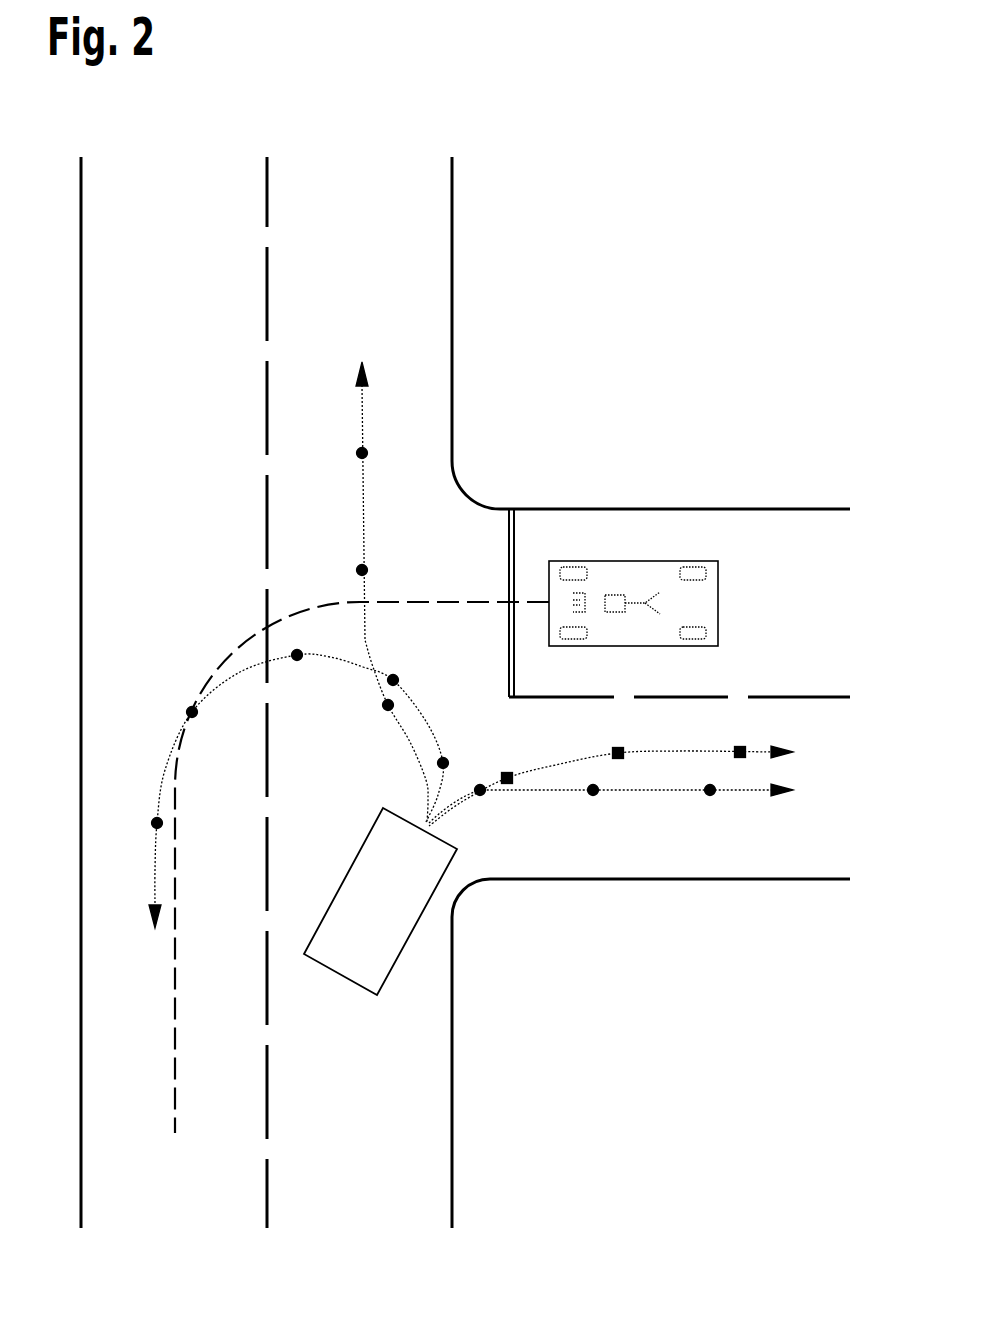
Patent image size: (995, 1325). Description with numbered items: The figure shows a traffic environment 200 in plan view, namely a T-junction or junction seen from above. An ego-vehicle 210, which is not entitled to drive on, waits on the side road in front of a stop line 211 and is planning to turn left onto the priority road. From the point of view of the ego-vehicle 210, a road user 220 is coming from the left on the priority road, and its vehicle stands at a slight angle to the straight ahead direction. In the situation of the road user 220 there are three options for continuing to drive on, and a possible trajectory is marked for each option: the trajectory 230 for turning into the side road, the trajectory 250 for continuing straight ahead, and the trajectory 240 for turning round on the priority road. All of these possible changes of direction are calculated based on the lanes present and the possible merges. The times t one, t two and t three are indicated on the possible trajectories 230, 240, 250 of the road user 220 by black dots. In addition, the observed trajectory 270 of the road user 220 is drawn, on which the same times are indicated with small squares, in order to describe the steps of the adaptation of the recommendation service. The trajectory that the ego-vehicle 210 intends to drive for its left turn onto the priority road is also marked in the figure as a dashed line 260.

The traffic environment 200 is at (647, 283).
The ego-vehicle 210 is at (705, 543).
The stop line 211 is at (512, 509).
The road user 220 is at (422, 938).
The trajectory for turning into the side road 230 is at (653, 788).
The trajectory for turning round 240 is at (437, 733).
The trajectory for continuing straight ahead 250 is at (363, 512).
The predicted trajectory of other vehicle 260 is at (232, 652).
The observed trajectory 270 is at (677, 752).